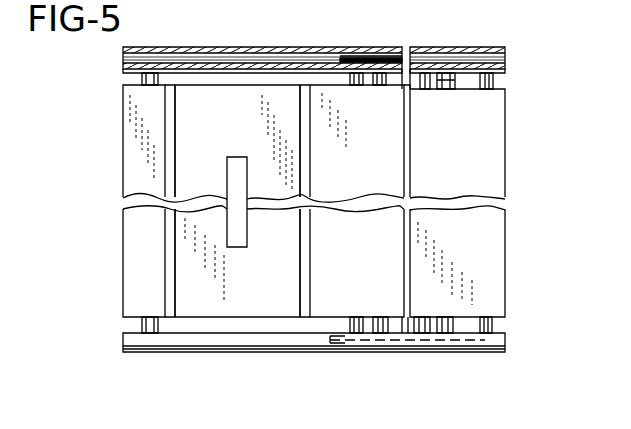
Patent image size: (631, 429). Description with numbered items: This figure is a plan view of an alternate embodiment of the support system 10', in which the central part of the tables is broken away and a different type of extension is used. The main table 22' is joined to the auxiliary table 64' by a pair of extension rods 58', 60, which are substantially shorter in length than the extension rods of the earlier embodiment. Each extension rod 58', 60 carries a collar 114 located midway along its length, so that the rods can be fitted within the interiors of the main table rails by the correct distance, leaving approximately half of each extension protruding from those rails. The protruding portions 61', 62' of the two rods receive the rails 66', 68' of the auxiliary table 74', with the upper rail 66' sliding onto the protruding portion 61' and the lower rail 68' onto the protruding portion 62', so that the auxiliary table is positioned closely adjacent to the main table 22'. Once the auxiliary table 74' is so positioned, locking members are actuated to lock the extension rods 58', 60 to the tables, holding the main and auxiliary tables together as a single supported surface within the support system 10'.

The support system 10' is at (370, 201).
The main table 22' is at (237, 201).
The extension rod 58' is at (357, 42).
The extension rod 60 is at (347, 345).
The protruding portion 61' is at (347, 90).
The protruding portion 62' is at (424, 368).
The auxiliary table 64' is at (497, 263).
The rail 66' is at (343, 56).
The rail 68' is at (350, 325).
The auxiliary table 74' is at (454, 201).
The collar 114 is at (406, 45).